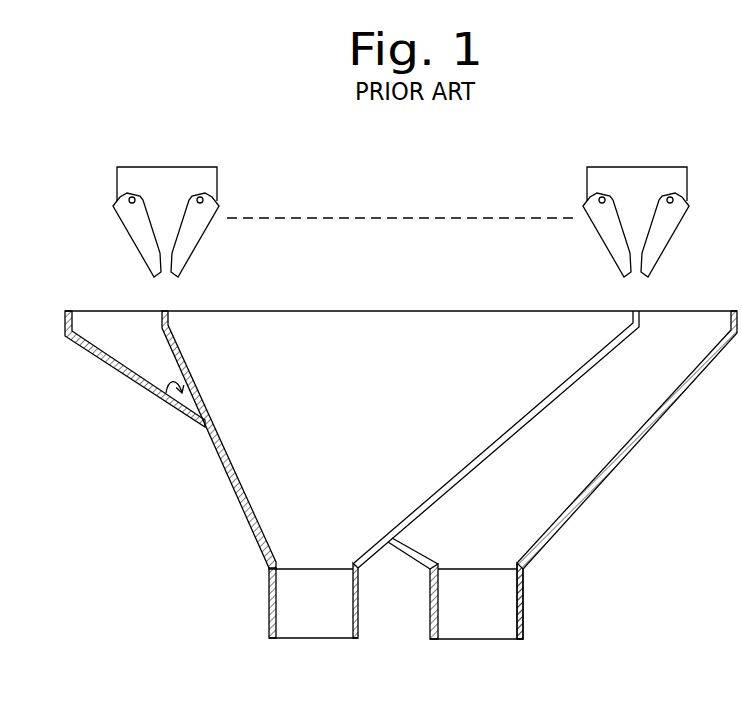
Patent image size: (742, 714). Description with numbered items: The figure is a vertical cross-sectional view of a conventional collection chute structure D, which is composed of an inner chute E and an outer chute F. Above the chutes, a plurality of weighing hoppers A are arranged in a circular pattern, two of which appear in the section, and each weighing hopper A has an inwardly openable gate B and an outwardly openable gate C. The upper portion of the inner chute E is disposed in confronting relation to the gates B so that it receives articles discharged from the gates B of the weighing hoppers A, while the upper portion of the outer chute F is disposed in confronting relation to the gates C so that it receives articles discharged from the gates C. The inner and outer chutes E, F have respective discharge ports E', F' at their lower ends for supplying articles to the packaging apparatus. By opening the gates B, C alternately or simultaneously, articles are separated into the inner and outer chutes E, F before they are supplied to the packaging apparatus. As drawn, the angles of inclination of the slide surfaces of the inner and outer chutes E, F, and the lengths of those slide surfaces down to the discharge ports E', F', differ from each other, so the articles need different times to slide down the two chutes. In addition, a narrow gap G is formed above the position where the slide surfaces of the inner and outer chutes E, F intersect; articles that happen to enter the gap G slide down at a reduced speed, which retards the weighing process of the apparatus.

The weighing hopper A is at (164, 188).
The inwardly openable gate B is at (195, 228).
The outwardly openable gate C is at (140, 232).
The collection chute structure D is at (242, 523).
The inner chute E is at (219, 440).
The outer chute F is at (135, 369).
The narrow gap G is at (168, 403).
The discharge port of inner chute E' is at (313, 625).
The discharge port of outer chute F' is at (476, 624).